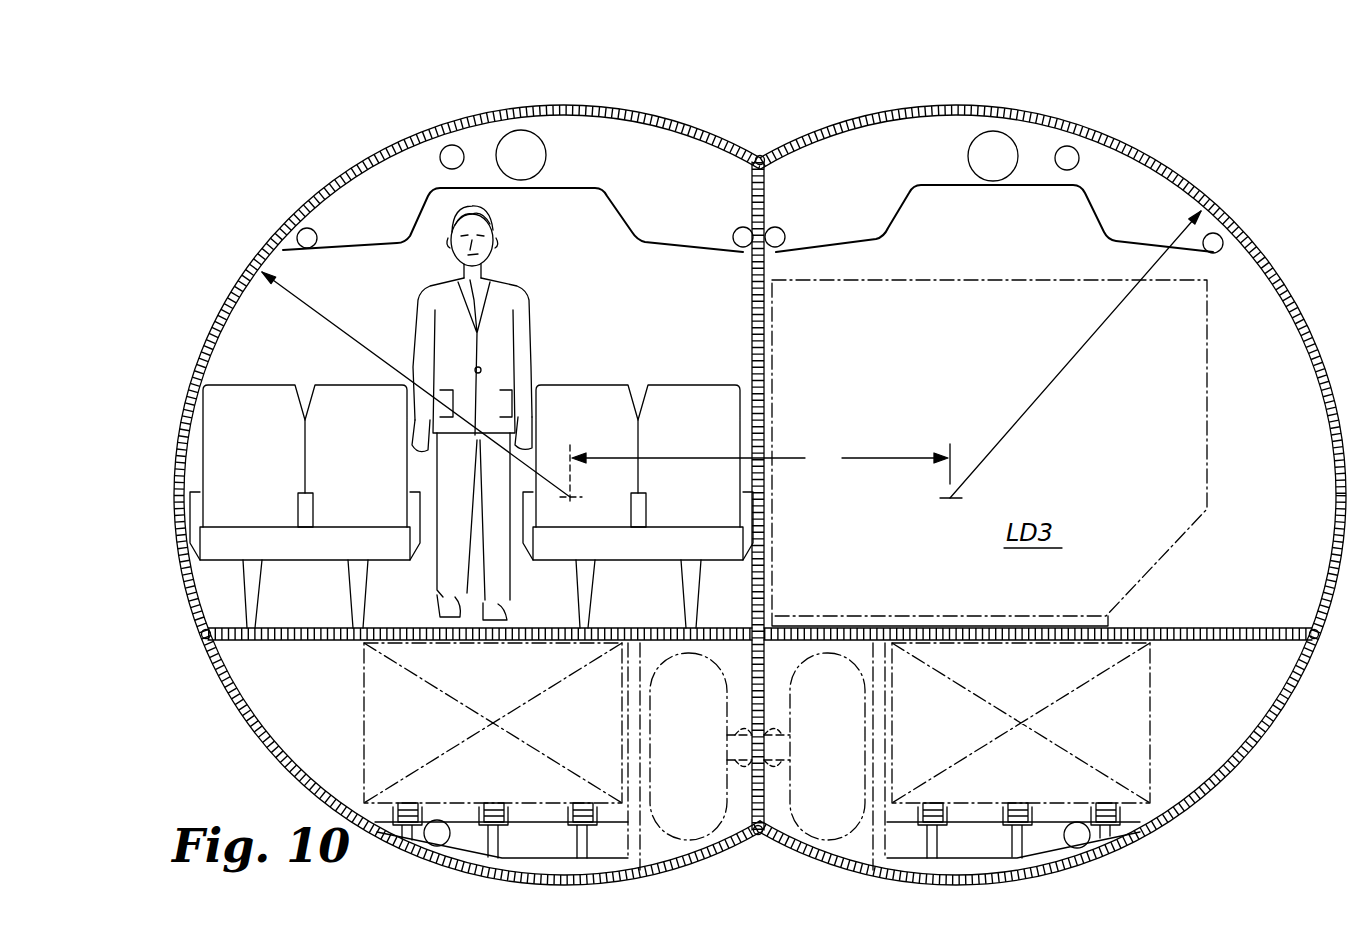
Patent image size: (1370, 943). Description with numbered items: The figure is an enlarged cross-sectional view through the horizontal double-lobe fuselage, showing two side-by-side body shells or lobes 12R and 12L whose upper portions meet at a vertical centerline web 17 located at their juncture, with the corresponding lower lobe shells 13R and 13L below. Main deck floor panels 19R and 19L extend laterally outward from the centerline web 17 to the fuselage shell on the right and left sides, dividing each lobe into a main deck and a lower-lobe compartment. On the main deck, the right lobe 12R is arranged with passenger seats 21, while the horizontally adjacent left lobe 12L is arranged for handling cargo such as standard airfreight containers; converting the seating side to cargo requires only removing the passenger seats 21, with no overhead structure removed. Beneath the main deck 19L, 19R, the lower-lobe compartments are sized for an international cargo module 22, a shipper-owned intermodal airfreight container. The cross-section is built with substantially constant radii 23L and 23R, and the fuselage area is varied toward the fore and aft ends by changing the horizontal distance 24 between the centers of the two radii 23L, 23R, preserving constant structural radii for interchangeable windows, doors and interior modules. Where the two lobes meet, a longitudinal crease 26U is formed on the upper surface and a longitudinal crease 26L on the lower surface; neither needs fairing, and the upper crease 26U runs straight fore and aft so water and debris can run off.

The right body shell lobe 12R is at (235, 293).
The left body shell lobe 12L is at (1290, 294).
The right lower fuselage lobe 13R is at (264, 742).
The left lower fuselage lobe 13L is at (1250, 752).
The vertical centerline web 17 is at (752, 314).
The right main deck floor panel 19R is at (314, 642).
The left main deck floor panel 19L is at (1041, 614).
The passenger seats 21 is at (646, 386).
The international cargo module 22 is at (364, 728).
The right lobe radius 23R is at (422, 388).
The left lobe radius 23L is at (1070, 354).
The horizontal distance between lobe centers 24 is at (760, 458).
The upper longitudinal crease 26U is at (783, 138).
The lower longitudinal crease 26L is at (754, 845).